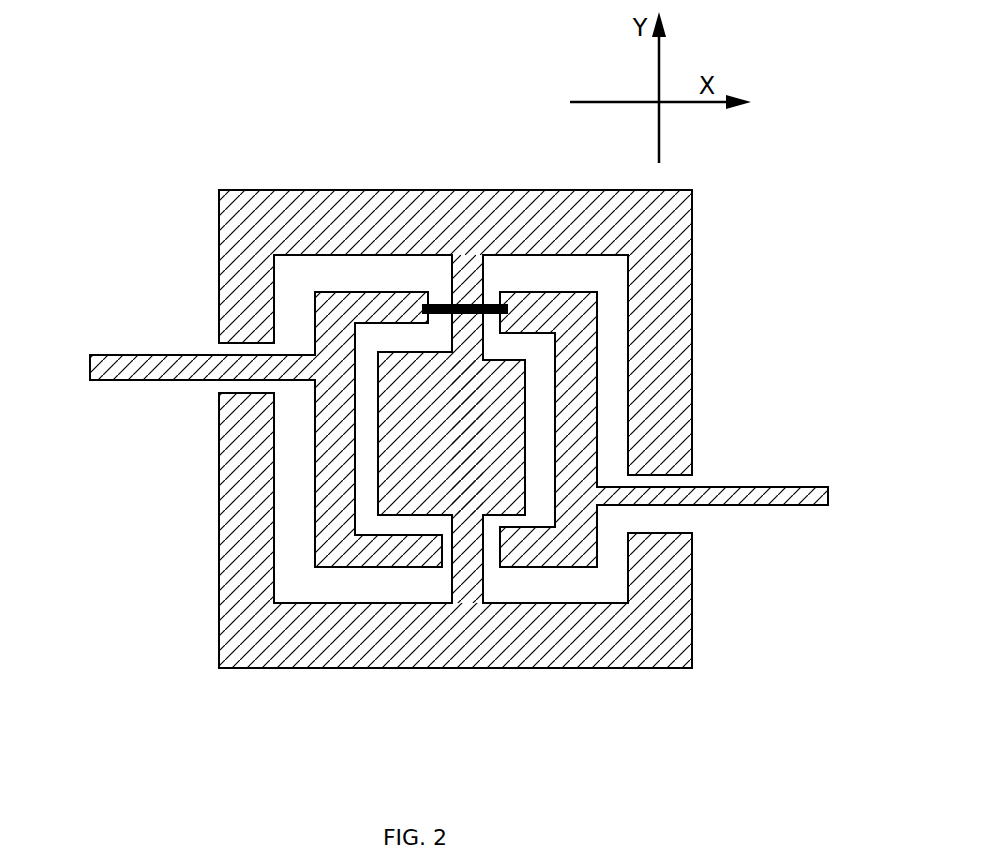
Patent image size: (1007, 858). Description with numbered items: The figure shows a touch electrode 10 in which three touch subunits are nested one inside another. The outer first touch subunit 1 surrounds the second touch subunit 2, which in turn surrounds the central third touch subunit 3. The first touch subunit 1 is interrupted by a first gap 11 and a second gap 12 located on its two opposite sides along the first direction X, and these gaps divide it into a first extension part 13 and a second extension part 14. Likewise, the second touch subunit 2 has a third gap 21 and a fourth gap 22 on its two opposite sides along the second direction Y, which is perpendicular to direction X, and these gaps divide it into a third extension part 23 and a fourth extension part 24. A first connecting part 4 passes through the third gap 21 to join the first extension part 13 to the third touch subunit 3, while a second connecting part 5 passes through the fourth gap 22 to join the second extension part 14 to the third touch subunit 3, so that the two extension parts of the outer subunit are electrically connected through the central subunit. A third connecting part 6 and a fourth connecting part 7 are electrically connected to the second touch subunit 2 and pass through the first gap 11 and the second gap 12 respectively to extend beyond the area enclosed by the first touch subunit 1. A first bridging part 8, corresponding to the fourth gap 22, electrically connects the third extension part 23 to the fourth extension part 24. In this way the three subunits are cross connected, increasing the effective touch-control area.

The touch electrode 10 is at (67, 119).
The first touch subunit 1 is at (215, 517).
The second touch subunit 2 is at (315, 523).
The third touch subunit 3 is at (398, 517).
The first connecting part 4 is at (460, 580).
The second connecting part 5 is at (466, 285).
The third connecting part 6 is at (718, 503).
The fourth connecting part 7 is at (148, 372).
The first bridging part 8 is at (472, 307).
The first gap 11 is at (688, 518).
The second gap 12 is at (238, 349).
The first extension part 13 is at (297, 632).
The second extension part 14 is at (297, 198).
The third gap 21 is at (491, 575).
The fourth gap 22 is at (441, 280).
The third extension part 23 is at (337, 433).
The fourth extension part 24 is at (590, 390).